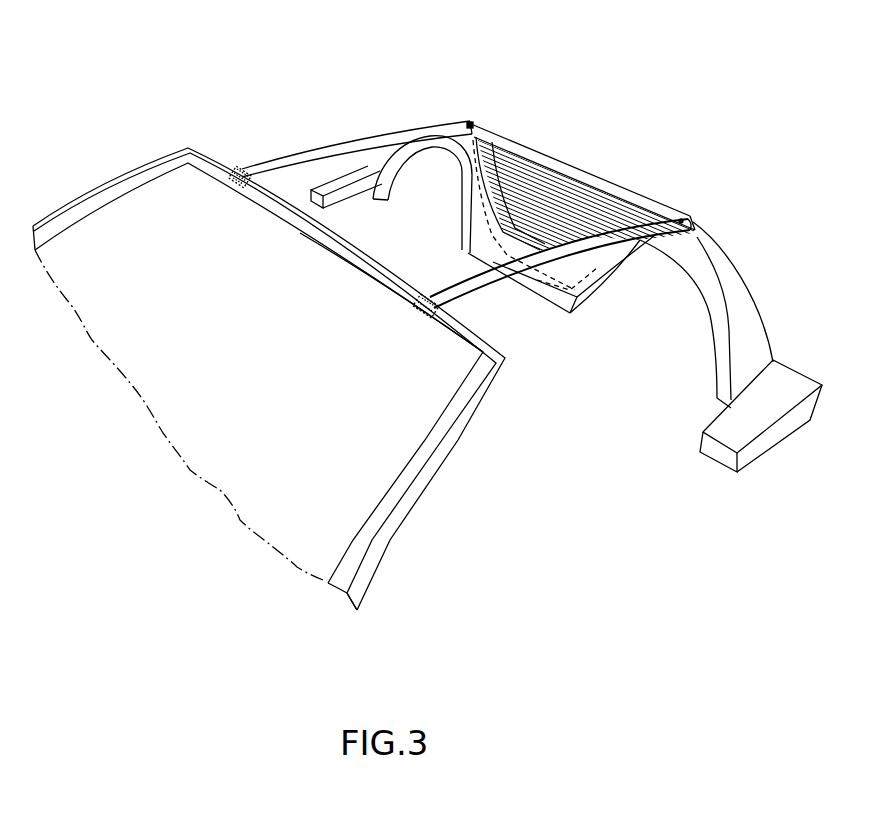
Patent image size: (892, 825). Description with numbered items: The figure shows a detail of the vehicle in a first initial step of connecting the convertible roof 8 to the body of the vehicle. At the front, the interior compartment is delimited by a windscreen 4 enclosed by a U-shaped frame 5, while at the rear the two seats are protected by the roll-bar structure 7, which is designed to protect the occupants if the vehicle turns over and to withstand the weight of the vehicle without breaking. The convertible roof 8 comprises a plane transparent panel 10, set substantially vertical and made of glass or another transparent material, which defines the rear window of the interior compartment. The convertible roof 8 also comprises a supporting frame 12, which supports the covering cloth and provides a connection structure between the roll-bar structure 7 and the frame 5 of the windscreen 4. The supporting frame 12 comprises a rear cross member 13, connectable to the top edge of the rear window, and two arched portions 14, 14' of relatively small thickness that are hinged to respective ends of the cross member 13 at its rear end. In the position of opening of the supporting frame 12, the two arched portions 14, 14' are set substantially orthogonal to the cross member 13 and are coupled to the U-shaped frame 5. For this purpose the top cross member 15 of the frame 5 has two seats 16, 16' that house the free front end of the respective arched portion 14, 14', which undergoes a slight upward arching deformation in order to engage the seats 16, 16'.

The windscreen 4 is at (61, 184).
The U-shaped frame 5 is at (140, 172).
The roll-bar structure 7 is at (750, 312).
The convertible roof 8 is at (536, 335).
The plane transparent panel 10 is at (578, 206).
The supporting frame 12 is at (471, 96).
The rear cross member 13 is at (533, 152).
The arched portion 14 is at (560, 267).
The arched portion 14' is at (357, 128).
The top cross member 15 is at (370, 262).
The seat 16 is at (459, 385).
The seat 16' is at (229, 132).